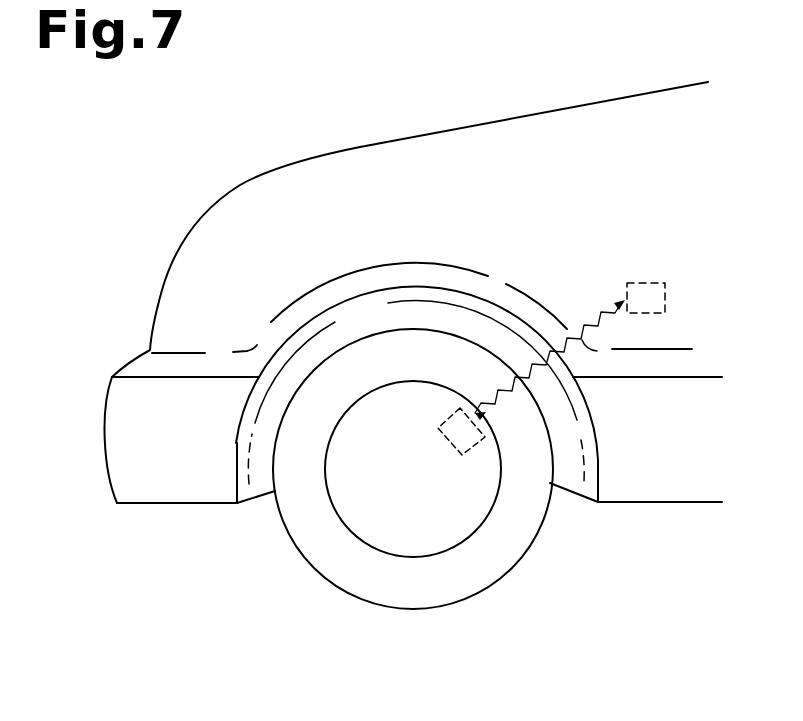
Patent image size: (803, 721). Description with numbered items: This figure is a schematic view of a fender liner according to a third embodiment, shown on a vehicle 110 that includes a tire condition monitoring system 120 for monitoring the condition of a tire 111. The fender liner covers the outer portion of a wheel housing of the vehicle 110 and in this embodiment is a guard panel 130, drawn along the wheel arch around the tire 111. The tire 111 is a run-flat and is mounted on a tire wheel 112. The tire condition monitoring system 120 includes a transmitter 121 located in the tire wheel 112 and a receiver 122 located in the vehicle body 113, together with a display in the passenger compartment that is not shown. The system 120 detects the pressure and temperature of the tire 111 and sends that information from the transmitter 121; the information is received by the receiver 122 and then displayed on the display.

The vehicle 110 is at (206, 176).
The tire 111 is at (435, 605).
The tire wheel 112 is at (363, 545).
The vehicle body 113 is at (178, 250).
The tire condition monitoring system 120 is at (692, 558).
The transmitter 121 is at (470, 452).
The receiver 122 is at (642, 313).
The guard panel 130 is at (265, 485).